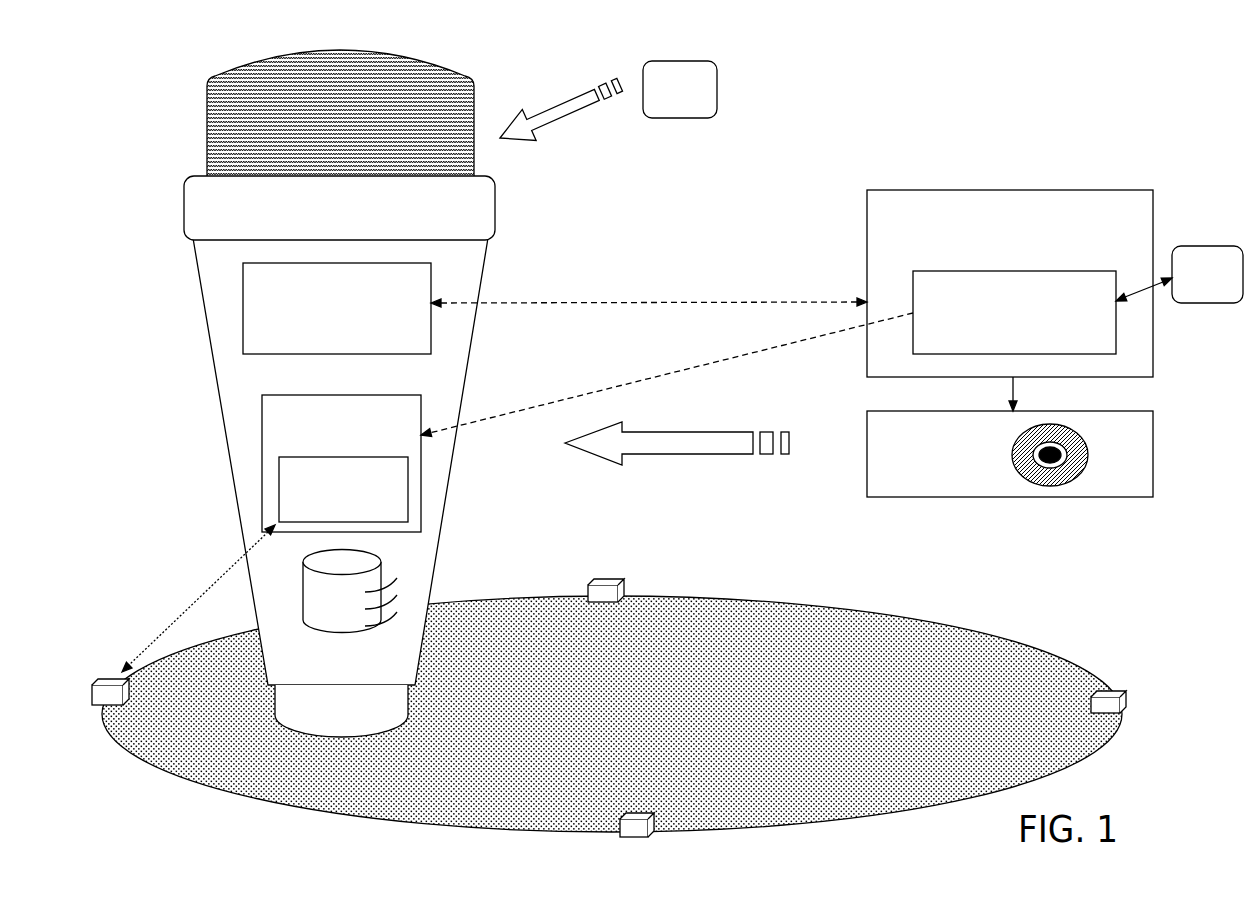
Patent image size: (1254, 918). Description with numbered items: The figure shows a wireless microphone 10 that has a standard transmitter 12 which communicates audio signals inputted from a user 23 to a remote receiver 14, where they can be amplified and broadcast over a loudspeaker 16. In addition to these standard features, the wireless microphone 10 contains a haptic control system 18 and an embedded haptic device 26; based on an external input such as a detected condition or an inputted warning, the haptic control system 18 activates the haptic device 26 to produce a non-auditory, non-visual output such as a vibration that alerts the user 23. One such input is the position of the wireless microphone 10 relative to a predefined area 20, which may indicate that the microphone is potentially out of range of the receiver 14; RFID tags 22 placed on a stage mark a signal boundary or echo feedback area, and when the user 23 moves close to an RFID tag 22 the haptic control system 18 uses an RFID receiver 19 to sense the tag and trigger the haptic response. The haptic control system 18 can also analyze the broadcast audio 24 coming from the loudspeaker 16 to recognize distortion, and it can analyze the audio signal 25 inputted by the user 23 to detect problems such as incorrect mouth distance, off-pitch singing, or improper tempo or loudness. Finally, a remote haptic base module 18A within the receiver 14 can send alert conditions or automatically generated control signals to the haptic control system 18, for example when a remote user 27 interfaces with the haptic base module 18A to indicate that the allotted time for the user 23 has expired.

The wireless microphone 10 is at (388, 208).
The transmitter 12 is at (370, 293).
The receiver 14 is at (971, 220).
The loudspeaker 16 is at (1003, 440).
The haptic control system 18 is at (355, 446).
The haptic base module 18A is at (957, 323).
The RFID receiver 19 is at (383, 503).
The predefined area 20 is at (808, 630).
The RFID tags 22 is at (92, 693).
The user 23 is at (678, 95).
The broadcast audio 24 is at (712, 448).
The audio signal 25 is at (585, 117).
The haptic device 26 is at (334, 601).
The remote user 27 is at (1208, 276).